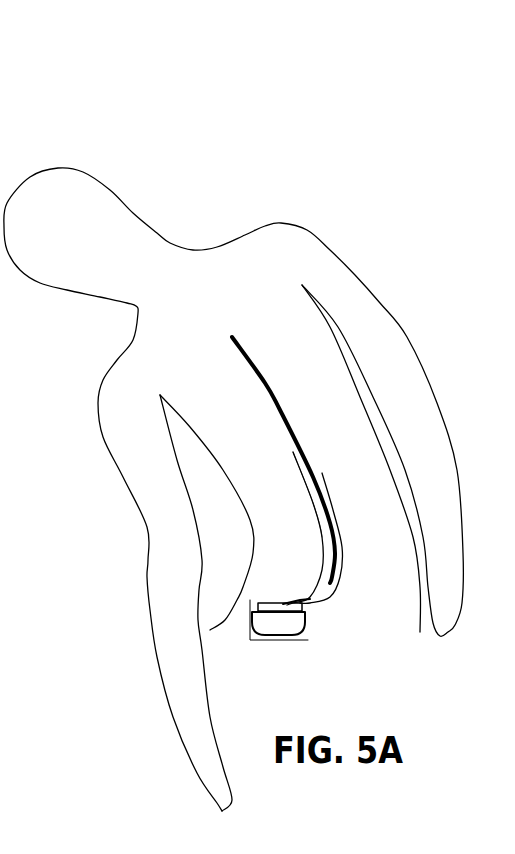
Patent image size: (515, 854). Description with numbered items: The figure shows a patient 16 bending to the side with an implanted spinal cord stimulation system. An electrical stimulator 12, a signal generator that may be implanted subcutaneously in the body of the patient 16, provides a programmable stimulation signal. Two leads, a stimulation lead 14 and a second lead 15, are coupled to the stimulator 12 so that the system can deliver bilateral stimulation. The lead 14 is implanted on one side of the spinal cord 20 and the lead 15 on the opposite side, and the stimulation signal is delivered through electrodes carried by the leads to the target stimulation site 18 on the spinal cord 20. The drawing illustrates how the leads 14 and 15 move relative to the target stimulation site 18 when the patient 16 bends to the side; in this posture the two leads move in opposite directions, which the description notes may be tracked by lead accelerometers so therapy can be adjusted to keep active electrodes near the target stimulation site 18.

The electrical stimulator 12 is at (313, 618).
The stimulation lead 14 is at (317, 517).
The lead 15 is at (343, 568).
The patient 16 is at (281, 223).
The target stimulation site 18 is at (350, 477).
The spinal cord 20 is at (265, 382).